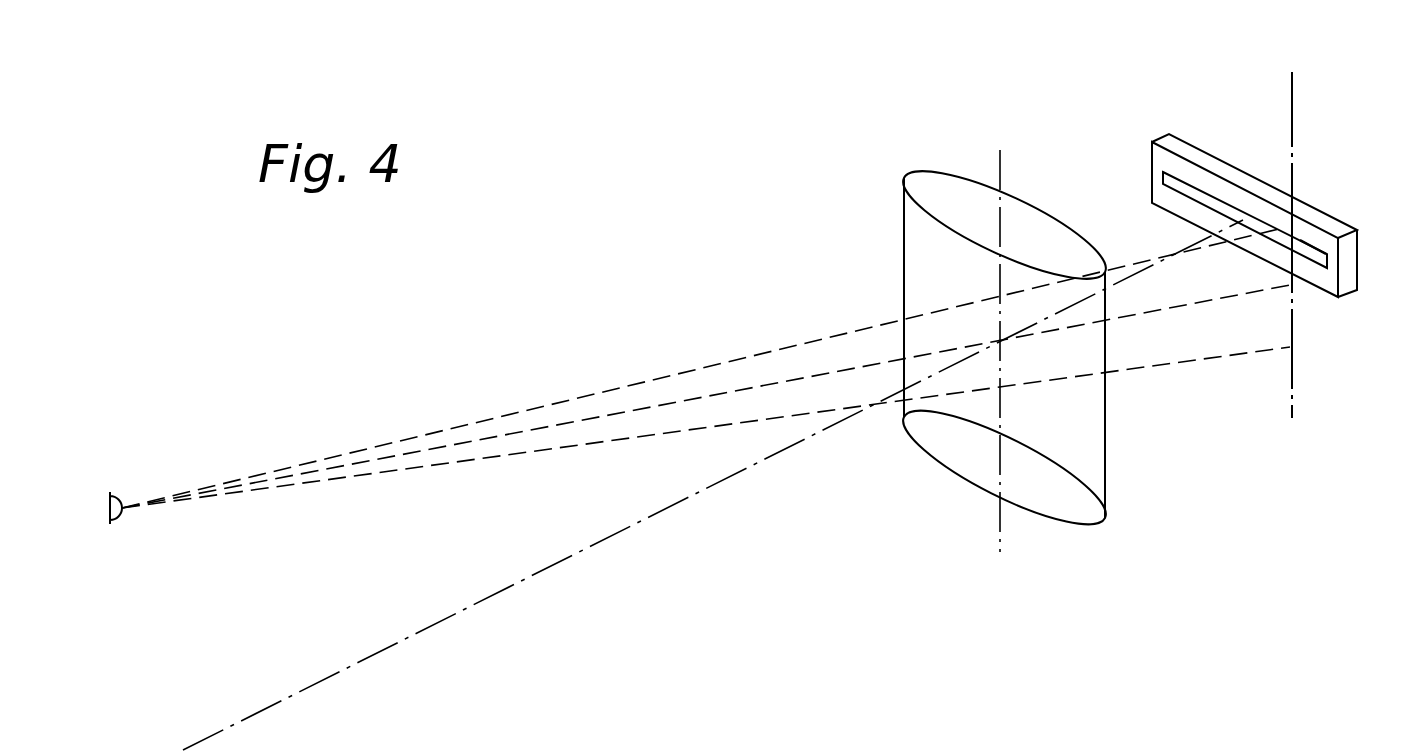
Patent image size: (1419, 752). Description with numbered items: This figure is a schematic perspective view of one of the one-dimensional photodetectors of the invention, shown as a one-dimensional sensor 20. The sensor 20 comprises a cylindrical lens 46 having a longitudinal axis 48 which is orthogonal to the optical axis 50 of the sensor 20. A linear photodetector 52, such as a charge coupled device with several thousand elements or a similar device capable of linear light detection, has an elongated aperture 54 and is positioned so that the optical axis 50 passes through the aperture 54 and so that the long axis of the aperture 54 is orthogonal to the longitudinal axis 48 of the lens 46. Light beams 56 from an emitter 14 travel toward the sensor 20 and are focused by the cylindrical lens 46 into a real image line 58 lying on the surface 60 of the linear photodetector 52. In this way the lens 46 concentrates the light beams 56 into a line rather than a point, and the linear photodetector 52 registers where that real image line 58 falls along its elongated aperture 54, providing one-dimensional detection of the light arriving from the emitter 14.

The emitter 14 is at (113, 521).
The one-dimensional sensor 20 is at (1223, 674).
The cylindrical lens 46 is at (963, 482).
The longitudinal axis 48 is at (1000, 530).
The optical axis 50 is at (440, 618).
The linear photodetector 52 is at (1153, 138).
The elongated aperture 54 is at (1320, 273).
The light beams 56 is at (503, 415).
The real image line 58 is at (1292, 95).
The surface 60 is at (1312, 242).